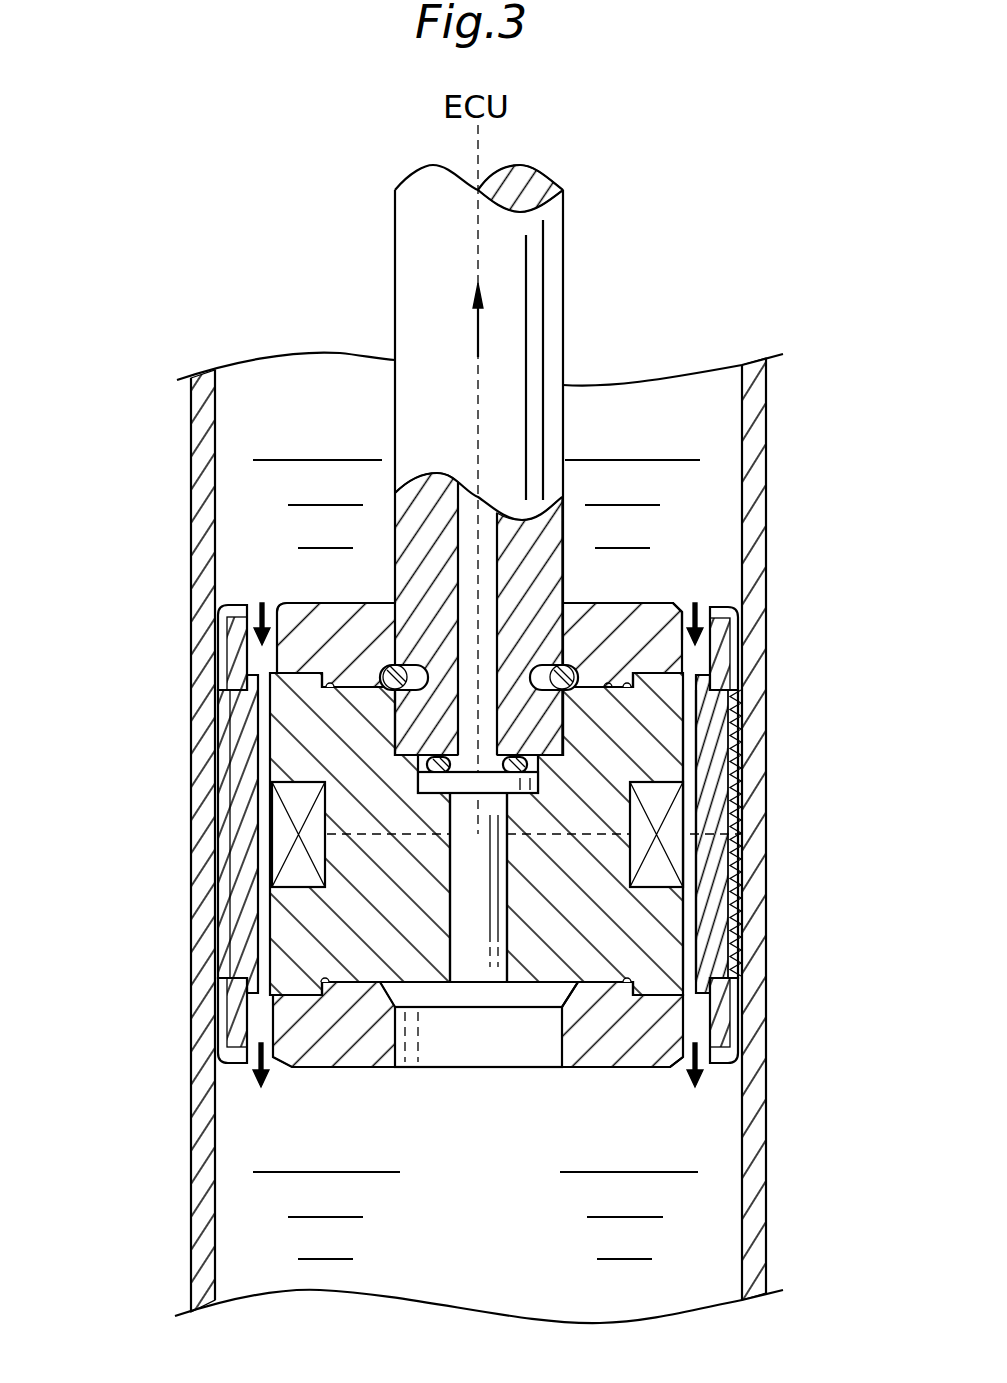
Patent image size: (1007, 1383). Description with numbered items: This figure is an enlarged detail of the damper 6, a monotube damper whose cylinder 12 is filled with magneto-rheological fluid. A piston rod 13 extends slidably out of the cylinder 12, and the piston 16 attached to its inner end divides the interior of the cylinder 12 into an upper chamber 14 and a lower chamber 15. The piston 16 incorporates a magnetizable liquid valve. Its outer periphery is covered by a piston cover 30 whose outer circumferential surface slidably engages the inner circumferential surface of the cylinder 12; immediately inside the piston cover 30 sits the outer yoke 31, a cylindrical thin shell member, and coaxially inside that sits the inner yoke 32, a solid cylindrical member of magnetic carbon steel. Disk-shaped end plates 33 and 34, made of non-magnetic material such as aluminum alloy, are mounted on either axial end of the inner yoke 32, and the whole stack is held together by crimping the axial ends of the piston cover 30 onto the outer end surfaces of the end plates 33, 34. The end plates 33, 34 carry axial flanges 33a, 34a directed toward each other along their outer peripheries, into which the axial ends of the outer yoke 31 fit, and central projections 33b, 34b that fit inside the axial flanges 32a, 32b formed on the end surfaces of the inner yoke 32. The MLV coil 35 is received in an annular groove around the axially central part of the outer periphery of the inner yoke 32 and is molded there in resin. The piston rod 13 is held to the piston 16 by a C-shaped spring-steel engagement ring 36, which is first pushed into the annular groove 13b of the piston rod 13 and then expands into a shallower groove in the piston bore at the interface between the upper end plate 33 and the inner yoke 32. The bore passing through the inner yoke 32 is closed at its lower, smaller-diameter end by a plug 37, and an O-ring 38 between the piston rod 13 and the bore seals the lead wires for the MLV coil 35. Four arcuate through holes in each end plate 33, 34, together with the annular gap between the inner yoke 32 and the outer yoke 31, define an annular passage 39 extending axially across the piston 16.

The damper 6 is at (150, 326).
The cylinder 12 is at (205, 975).
The piston rod 13 is at (557, 300).
The annular groove 13b is at (386, 672).
The upper chamber 14 is at (730, 482).
The lower chamber 15 is at (728, 1224).
The piston 16 is at (283, 529).
The piston cover 30 is at (218, 640).
The outer yoke 31 is at (718, 772).
The inner yoke 32 is at (682, 912).
The axial flange 32a is at (655, 630).
The axial flange 32b is at (655, 1000).
The upper end plate 33 is at (680, 603).
The axial flange 33a is at (742, 662).
The central projection 33b is at (610, 683).
The lower end plate 34 is at (645, 1068).
The axial flange 34a is at (725, 1015).
The central projection 34b is at (605, 1012).
The MLV coil 35 is at (282, 848).
The engagement ring 36 is at (573, 665).
The plug 37 is at (472, 977).
The O-ring 38 is at (415, 765).
The annular passage 39 is at (692, 836).